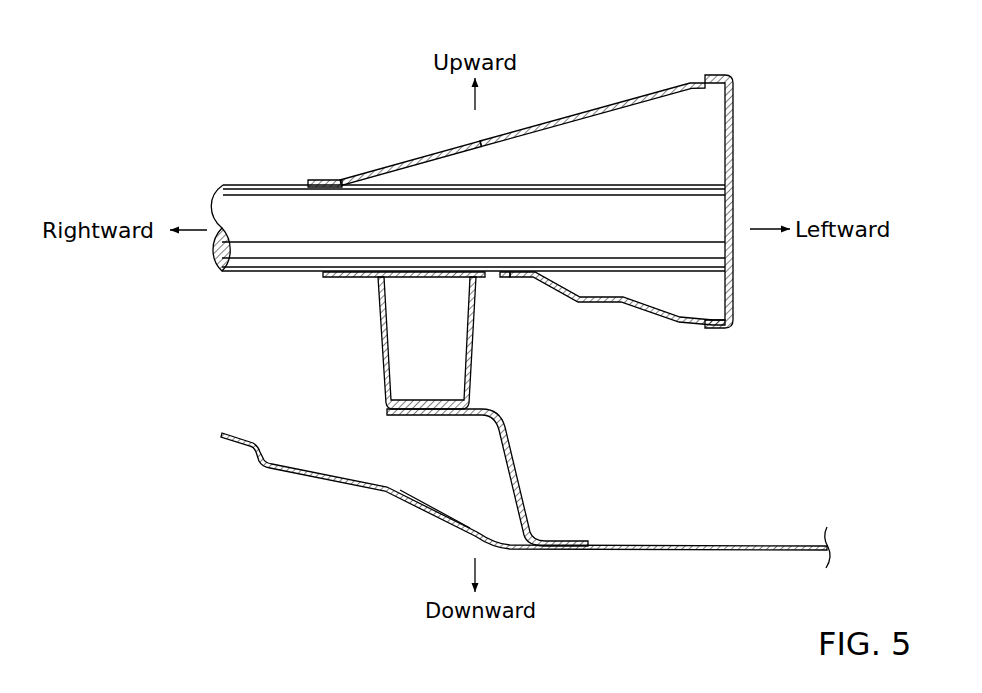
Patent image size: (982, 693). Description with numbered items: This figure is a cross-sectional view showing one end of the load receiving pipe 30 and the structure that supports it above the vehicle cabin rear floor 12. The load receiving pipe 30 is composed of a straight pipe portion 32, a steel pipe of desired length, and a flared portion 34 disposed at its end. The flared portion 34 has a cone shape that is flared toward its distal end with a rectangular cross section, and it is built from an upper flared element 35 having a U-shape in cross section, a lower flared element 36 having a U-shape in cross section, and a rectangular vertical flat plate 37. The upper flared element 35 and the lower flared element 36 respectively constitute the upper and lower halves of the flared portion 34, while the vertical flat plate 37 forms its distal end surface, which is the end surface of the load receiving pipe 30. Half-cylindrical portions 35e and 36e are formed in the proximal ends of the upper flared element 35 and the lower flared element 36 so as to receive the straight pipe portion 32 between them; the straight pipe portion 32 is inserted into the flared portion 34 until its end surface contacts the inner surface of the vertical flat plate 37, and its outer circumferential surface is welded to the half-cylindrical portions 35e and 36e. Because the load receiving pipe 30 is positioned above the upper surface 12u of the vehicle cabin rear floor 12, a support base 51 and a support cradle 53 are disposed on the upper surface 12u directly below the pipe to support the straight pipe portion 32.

The load receiving pipe 30 is at (242, 175).
The straight pipe portion 32 is at (397, 208).
The flared portion 34 is at (596, 107).
The upper flared element 35 is at (450, 149).
The half-cylindrical portion 35e is at (314, 186).
The lower flared element 36 is at (648, 319).
The half-cylindrical portion 36e is at (516, 272).
The vertical flat plate 37 is at (733, 168).
The support cradle 53 is at (380, 335).
The support base 51 is at (520, 478).
The vehicle cabin rear floor 12 is at (326, 462).
The upper surface 12u is at (430, 496).